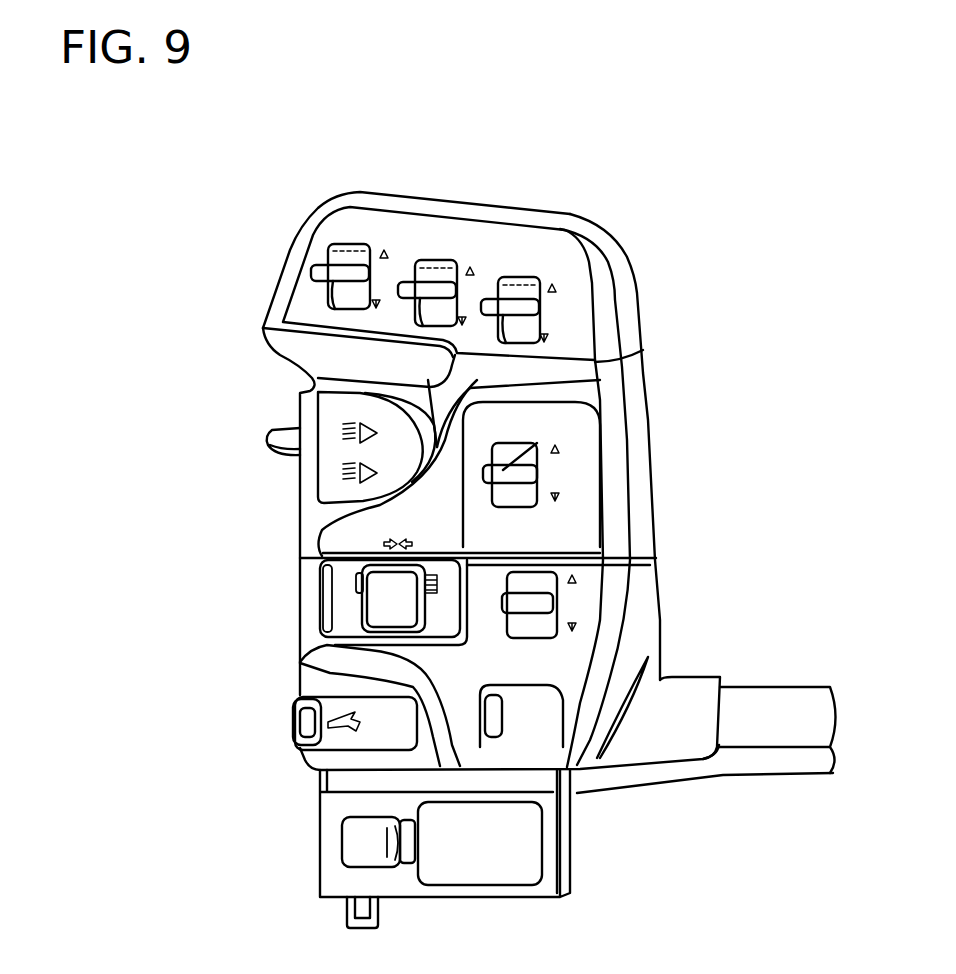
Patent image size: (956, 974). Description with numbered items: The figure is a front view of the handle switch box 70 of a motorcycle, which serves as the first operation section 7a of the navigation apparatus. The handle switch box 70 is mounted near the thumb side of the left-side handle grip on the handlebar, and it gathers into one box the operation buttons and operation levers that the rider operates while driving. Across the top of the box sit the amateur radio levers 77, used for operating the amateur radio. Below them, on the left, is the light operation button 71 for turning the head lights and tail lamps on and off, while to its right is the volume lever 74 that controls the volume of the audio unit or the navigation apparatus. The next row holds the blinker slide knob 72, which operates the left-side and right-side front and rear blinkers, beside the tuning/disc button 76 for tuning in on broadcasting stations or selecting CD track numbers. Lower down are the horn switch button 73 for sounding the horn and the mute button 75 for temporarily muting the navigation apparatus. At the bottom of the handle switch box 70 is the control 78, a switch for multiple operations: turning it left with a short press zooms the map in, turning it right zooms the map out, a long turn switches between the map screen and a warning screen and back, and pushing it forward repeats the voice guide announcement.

The first operation section 7a is at (365, 145).
The handle switch box 70 is at (270, 213).
The light operation button 71 is at (322, 479).
The blinker slide knob 72 is at (380, 612).
The horn switch button 73 is at (293, 728).
The volume lever 74 is at (545, 440).
The mute button 75 is at (543, 700).
The tuning/disc button 76 is at (527, 600).
The amateur radio levers 77 is at (563, 202).
The control 78 is at (398, 863).